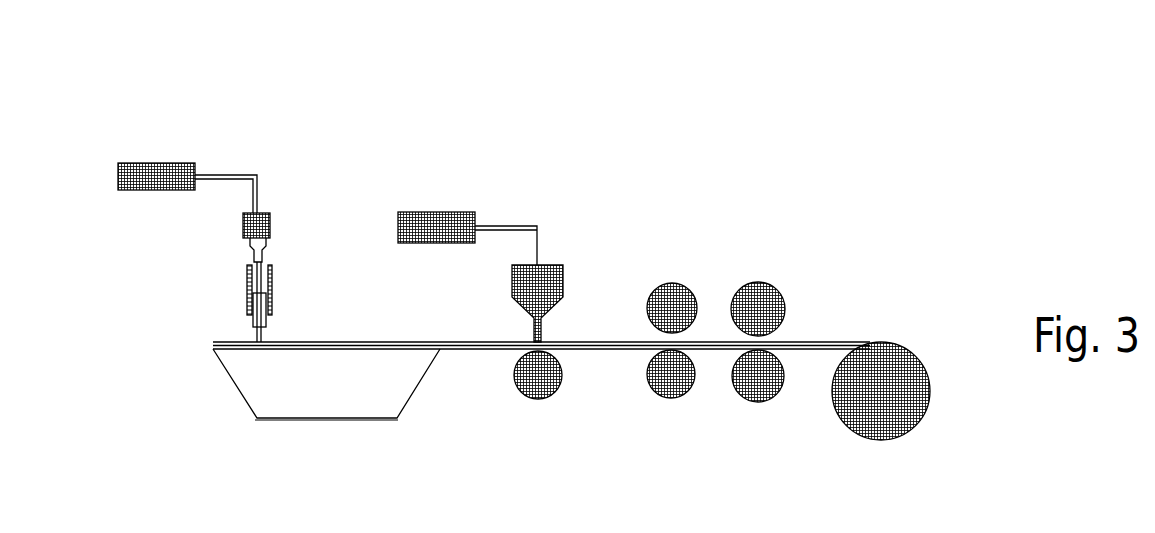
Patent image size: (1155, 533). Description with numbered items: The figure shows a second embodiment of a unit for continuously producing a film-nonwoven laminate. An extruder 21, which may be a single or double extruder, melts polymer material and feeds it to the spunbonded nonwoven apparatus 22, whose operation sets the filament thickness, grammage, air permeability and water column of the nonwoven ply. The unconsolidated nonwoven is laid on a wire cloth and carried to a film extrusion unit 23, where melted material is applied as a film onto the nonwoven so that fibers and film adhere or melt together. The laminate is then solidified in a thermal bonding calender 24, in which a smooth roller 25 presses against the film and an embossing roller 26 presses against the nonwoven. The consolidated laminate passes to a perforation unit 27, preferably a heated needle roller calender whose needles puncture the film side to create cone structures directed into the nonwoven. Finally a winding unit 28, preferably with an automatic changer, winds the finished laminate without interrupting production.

The extruder 21 is at (158, 163).
The spunbonded nonwoven apparatus 22 is at (222, 290).
The film extrusion unit 23 is at (503, 212).
The thermal bonding calender 24 is at (645, 278).
The smooth roller 25 is at (695, 286).
The embossing roller 26 is at (663, 398).
The perforation unit 27 is at (773, 286).
The winding unit 28 is at (930, 407).